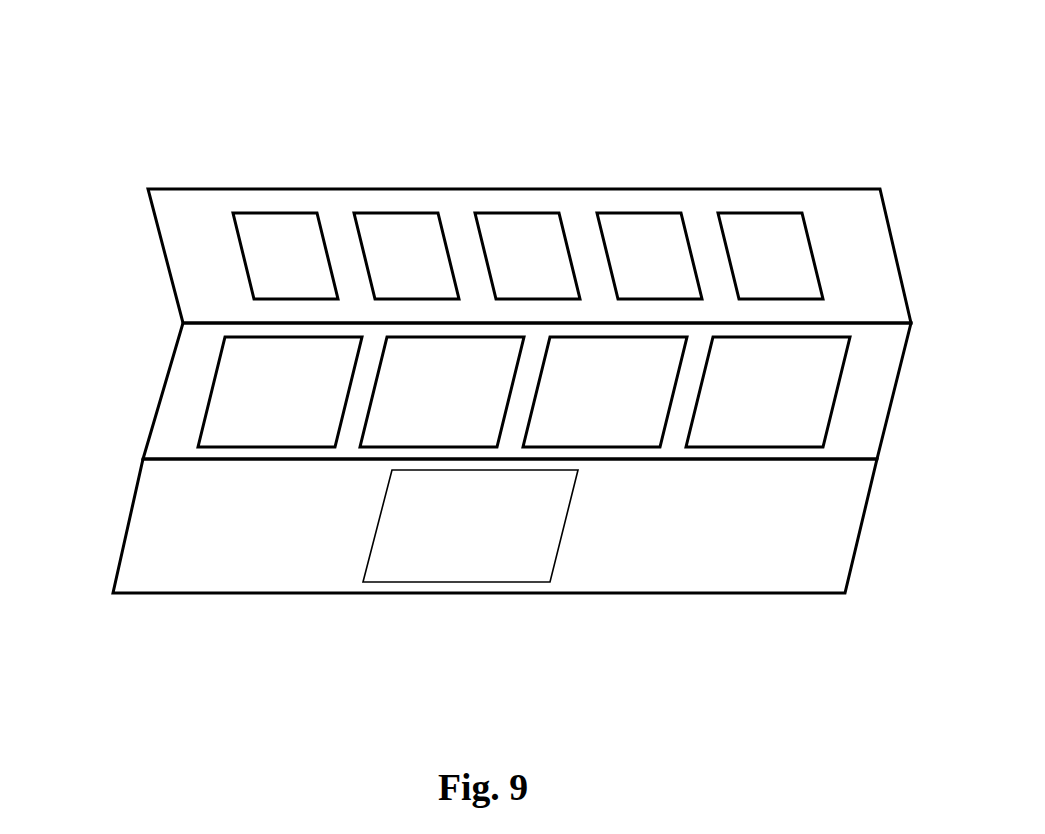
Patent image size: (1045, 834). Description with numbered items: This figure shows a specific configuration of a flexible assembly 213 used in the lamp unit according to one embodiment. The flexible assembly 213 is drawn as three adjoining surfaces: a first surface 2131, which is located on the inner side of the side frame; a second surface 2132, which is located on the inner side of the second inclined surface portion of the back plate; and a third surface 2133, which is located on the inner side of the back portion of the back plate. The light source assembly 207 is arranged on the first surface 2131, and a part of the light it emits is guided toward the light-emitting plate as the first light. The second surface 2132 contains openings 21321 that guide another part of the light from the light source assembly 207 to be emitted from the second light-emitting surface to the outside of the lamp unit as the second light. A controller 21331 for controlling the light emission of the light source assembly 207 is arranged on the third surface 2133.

The flexible assembly 213 is at (843, 66).
The first surface 2131 is at (197, 212).
The second surface 2132 is at (168, 383).
The third surface 2133 is at (132, 513).
The light source assembly 207 is at (400, 212).
The openings 21321 is at (758, 402).
The controller 21331 is at (463, 585).